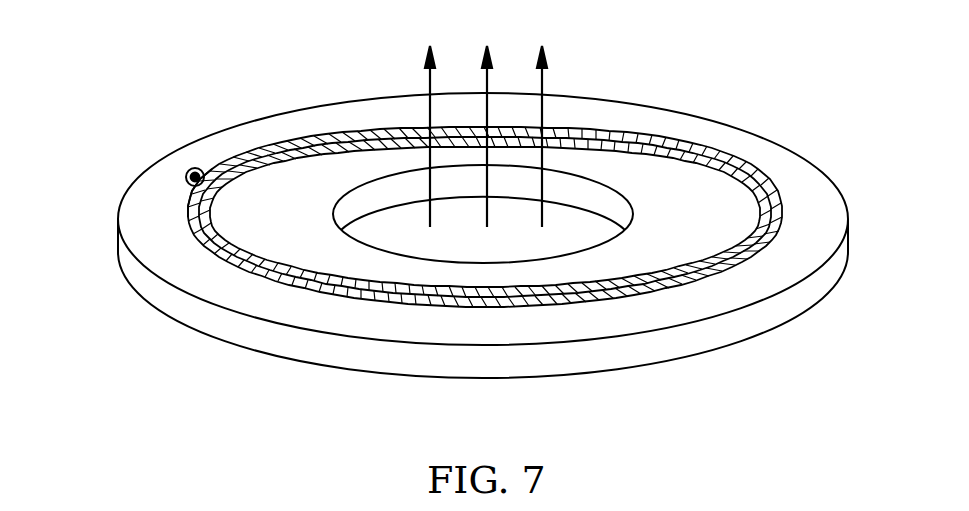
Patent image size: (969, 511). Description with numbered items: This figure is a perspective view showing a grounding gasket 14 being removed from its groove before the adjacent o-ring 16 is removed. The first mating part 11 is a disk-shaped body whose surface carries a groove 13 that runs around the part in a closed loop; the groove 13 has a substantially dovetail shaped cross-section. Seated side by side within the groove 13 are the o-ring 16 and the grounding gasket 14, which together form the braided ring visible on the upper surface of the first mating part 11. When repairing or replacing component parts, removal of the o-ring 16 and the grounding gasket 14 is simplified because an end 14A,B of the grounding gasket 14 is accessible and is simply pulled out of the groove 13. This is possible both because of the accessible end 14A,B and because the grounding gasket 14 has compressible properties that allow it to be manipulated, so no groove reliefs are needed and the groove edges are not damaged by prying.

The first mating part 11 is at (735, 148).
The groove 13 is at (427, 232).
The grounding gasket 14 is at (395, 300).
The o-ring 16 is at (545, 292).
The ends of the grounding gasket 14A,B is at (186, 203).